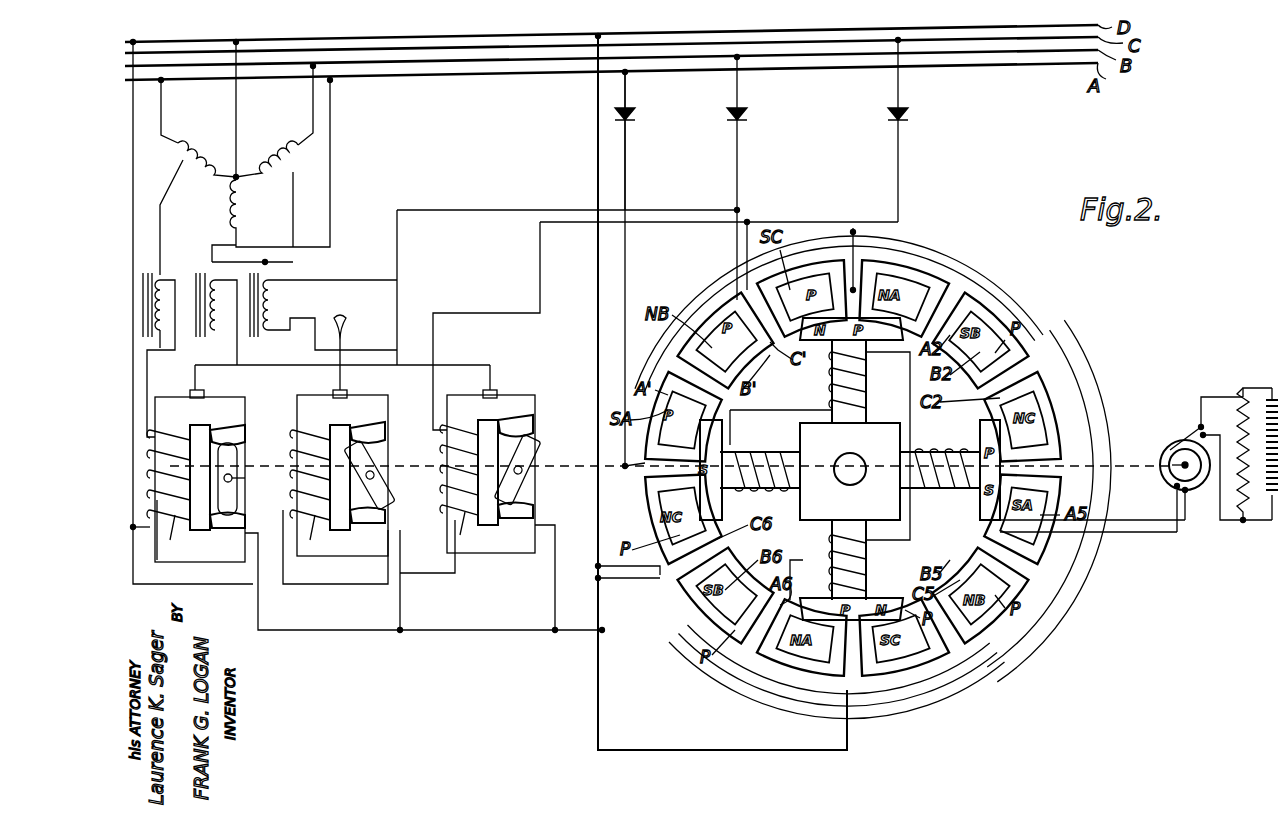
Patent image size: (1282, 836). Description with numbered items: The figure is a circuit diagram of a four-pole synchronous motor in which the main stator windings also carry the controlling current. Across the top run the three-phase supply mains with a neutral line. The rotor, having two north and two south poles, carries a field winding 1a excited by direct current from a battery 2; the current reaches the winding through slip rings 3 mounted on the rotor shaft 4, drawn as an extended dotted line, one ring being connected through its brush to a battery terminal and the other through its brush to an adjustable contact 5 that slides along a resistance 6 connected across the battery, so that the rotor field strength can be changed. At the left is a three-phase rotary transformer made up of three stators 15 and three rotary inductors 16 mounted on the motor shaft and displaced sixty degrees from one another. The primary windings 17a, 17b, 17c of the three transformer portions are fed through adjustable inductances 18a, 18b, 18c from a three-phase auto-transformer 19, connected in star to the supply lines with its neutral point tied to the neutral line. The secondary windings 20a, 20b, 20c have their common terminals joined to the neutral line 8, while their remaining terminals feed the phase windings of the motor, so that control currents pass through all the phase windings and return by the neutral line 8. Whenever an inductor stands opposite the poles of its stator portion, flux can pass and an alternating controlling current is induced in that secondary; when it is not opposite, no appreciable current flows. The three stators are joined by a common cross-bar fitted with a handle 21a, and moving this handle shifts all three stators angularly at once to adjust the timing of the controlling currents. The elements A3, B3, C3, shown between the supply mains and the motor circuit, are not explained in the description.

The field winding 1a is at (832, 370).
The battery 2 is at (1270, 439).
The slip rings 3 is at (1165, 476).
The rotor shaft 4 is at (1158, 455).
The adjustable contact 5 is at (1235, 395).
The resistance 6 is at (1243, 524).
The neutral line 8 is at (598, 392).
The stators 15 is at (315, 413).
The rotary inductors 16 is at (231, 471).
The primary winding 17a is at (172, 530).
The primary winding 17b is at (314, 533).
The primary winding 17c is at (464, 530).
The adjustable inductance 18a is at (178, 290).
The adjustable inductance 18b is at (225, 310).
The adjustable inductance 18c is at (275, 300).
The three-phase auto-transformer 19 is at (246, 158).
The secondary winding 20a is at (233, 545).
The secondary winding 20b is at (362, 478).
The secondary winding 20c is at (511, 475).
The handle 21a is at (345, 335).
The rectifier A A3 is at (633, 115).
The rectifier B B3 is at (748, 115).
The rectifier C C3 is at (906, 115).